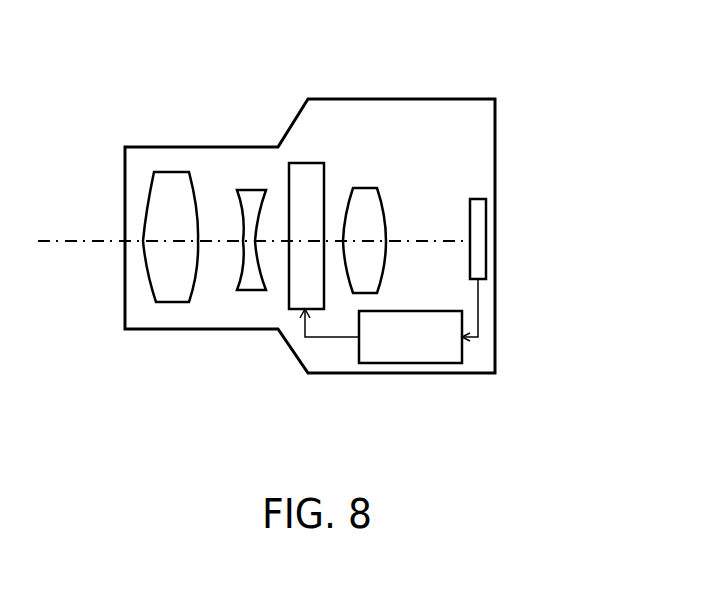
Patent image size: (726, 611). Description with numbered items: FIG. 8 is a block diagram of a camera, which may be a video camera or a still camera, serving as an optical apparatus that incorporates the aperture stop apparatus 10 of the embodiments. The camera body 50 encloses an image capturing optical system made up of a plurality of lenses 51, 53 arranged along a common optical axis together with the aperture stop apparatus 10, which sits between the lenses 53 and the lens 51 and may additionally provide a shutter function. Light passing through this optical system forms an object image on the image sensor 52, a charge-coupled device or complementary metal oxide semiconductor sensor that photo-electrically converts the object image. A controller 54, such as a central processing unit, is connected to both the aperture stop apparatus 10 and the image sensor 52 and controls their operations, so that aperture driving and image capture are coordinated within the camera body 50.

The aperture stop apparatus 10 is at (310, 163).
The camera body 50 is at (425, 99).
The lens 51 is at (361, 188).
The image sensor 52 is at (480, 266).
The lenses 53 is at (249, 290).
The controller 54 is at (397, 363).